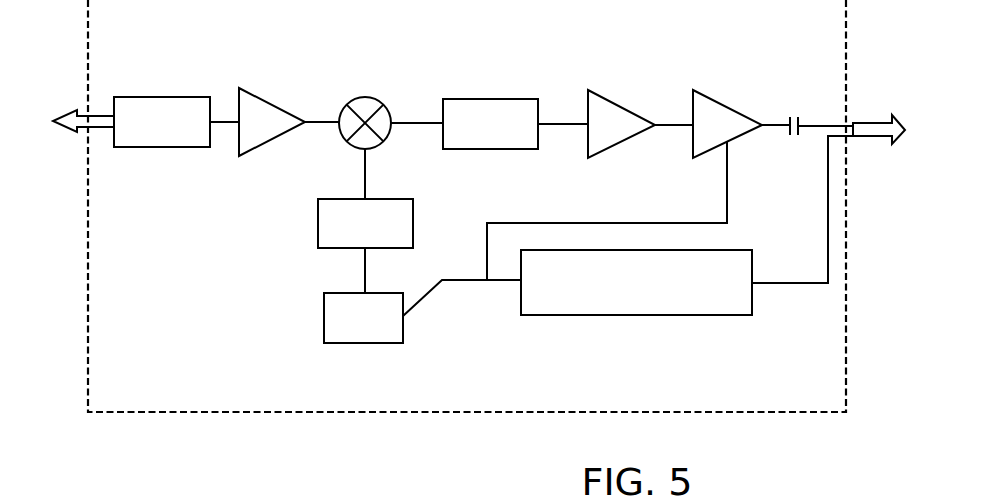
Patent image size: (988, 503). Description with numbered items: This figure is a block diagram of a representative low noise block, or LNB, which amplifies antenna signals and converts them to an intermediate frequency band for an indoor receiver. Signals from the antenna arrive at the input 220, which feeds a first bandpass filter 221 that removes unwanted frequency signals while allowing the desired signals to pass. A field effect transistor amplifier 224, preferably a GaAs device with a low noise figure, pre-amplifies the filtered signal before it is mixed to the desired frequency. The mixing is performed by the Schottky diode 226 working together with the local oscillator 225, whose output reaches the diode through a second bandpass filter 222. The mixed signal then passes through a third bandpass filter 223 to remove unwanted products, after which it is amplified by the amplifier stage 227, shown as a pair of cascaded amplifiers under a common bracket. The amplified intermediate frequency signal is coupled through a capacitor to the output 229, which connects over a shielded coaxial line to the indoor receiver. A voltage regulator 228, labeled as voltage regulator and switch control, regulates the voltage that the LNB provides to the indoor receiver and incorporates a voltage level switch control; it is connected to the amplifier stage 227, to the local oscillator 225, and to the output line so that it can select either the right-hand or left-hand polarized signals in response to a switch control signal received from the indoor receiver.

The input 220 is at (77, 112).
The bandpass filter 221 is at (180, 97).
The bandpass filter 222 is at (318, 222).
The bandpass filter 223 is at (513, 99).
The field effect transistor amplifier 224 is at (280, 112).
The local oscillator 225 is at (324, 312).
The Schottky diode 226 is at (375, 97).
The amplifier stage 227 is at (740, 70).
The voltage regulator 228 is at (650, 315).
The output 229 is at (873, 120).